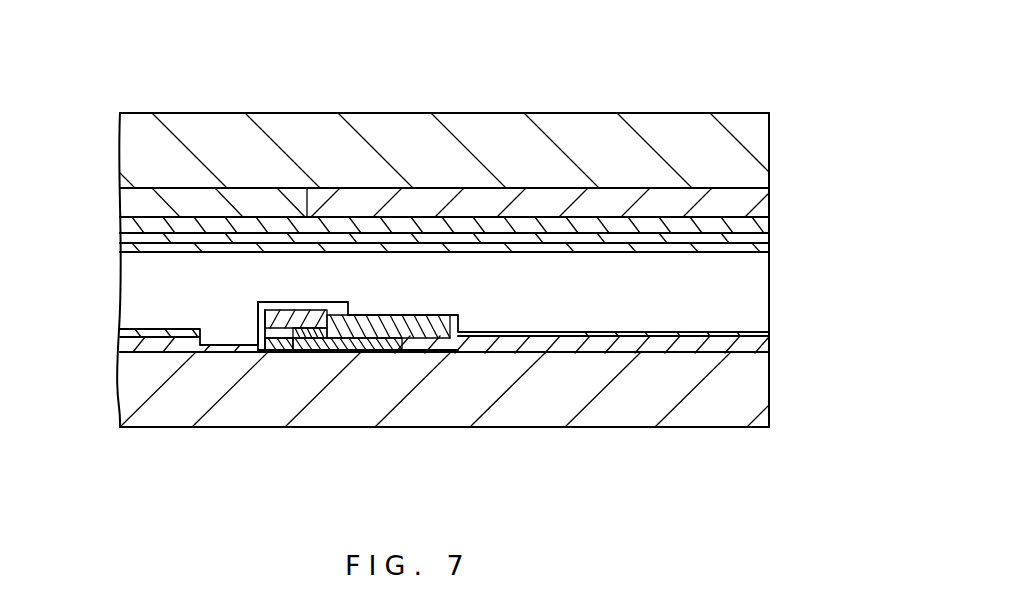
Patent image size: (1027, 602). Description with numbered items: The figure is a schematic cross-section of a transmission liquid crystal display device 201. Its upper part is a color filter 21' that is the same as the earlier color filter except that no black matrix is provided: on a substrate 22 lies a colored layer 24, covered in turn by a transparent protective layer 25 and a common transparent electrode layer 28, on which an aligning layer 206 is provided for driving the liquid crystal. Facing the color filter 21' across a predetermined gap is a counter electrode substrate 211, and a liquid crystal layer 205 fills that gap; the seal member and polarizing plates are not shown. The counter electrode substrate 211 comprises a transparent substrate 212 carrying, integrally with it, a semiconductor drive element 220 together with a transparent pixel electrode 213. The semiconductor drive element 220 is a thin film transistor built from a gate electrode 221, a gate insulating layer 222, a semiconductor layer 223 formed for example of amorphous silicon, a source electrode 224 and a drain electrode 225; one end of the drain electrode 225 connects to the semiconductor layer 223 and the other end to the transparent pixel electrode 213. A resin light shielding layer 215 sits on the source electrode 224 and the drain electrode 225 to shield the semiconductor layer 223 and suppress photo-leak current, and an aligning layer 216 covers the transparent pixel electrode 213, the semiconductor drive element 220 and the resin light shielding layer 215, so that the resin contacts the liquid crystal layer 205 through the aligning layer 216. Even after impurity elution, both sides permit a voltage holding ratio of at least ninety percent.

The liquid crystal display device 201 is at (661, 76).
The color filter 21' is at (510, 93).
The substrate 22 is at (770, 158).
The colored layer 24 is at (776, 210).
The transparent protective layer 25 is at (770, 228).
The common transparent electrode layer 28 is at (770, 243).
The aligning layer 206 is at (770, 263).
The liquid crystal layer 205 is at (640, 297).
The aligning layer 216 is at (140, 328).
The transparent pixel electrode 213 is at (120, 342).
The transparent substrate 212 is at (757, 393).
The counter electrode substrate 211 is at (731, 443).
The semiconductor drive element 220 is at (357, 375).
The resin light shielding layer 215 is at (290, 306).
The drain electrode 225 is at (383, 328).
The source electrode 224 is at (262, 324).
The gate insulating layer 222 is at (385, 352).
The gate electrode 221 is at (310, 352).
The semiconductor layer 223 is at (283, 340).